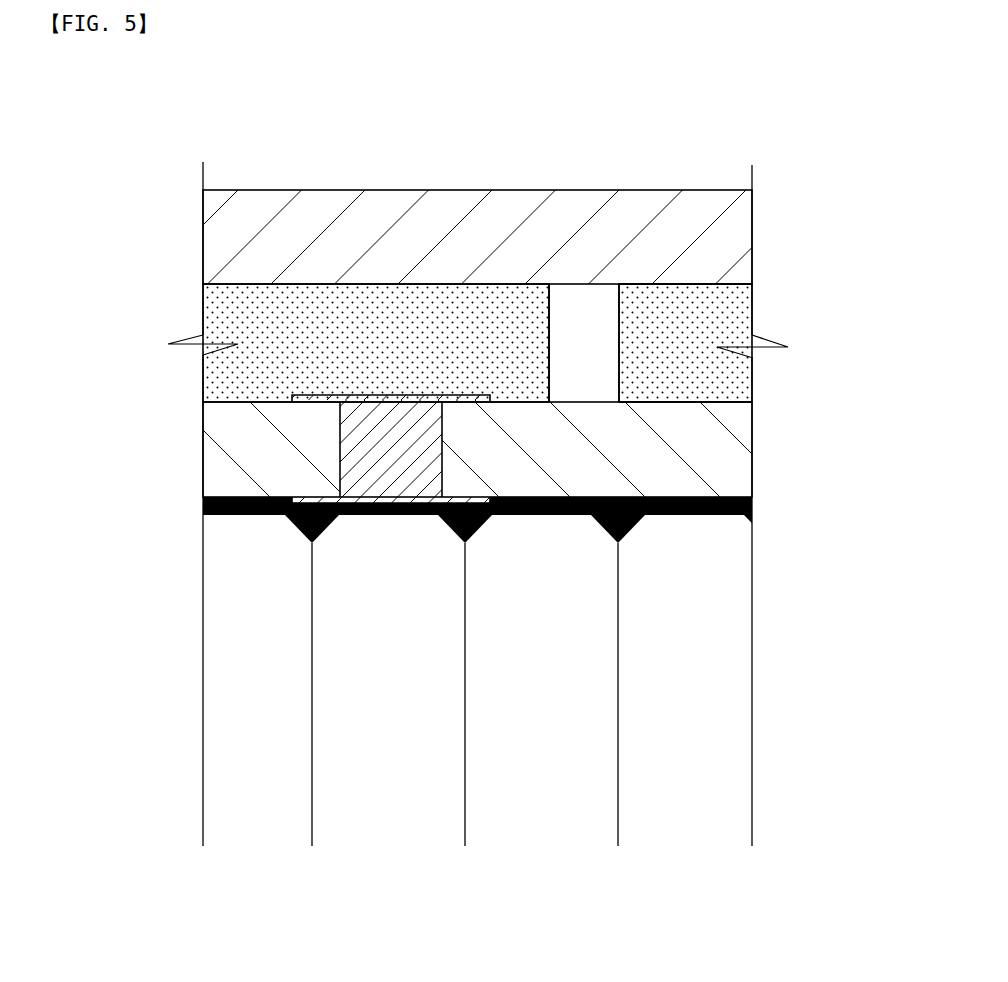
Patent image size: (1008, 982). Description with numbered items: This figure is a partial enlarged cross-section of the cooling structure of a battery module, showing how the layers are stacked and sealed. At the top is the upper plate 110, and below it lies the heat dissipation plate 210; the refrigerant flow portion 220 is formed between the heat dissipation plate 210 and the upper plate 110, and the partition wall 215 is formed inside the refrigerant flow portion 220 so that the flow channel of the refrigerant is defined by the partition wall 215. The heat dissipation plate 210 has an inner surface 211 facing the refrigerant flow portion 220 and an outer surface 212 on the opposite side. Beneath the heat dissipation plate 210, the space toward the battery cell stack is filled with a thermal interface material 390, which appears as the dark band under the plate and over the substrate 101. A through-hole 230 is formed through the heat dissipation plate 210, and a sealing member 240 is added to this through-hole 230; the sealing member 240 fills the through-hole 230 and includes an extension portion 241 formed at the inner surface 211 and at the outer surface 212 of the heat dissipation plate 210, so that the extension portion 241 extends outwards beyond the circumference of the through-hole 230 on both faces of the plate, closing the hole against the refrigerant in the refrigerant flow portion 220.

The substrate 101 is at (725, 730).
The upper plate 110 is at (723, 238).
The heat dissipation plate 210 is at (723, 474).
The inner surface of the heat dissipation plate 211 is at (542, 495).
The outer surface of the heat dissipation plate 212 is at (667, 400).
The partition wall 215 is at (583, 332).
The refrigerant flow portion 220 is at (723, 322).
The through-hole 230 is at (437, 463).
The sealing member 240 is at (380, 452).
The extension portion 241 is at (313, 398).
The thermal interface material (TIM) 390 is at (670, 514).